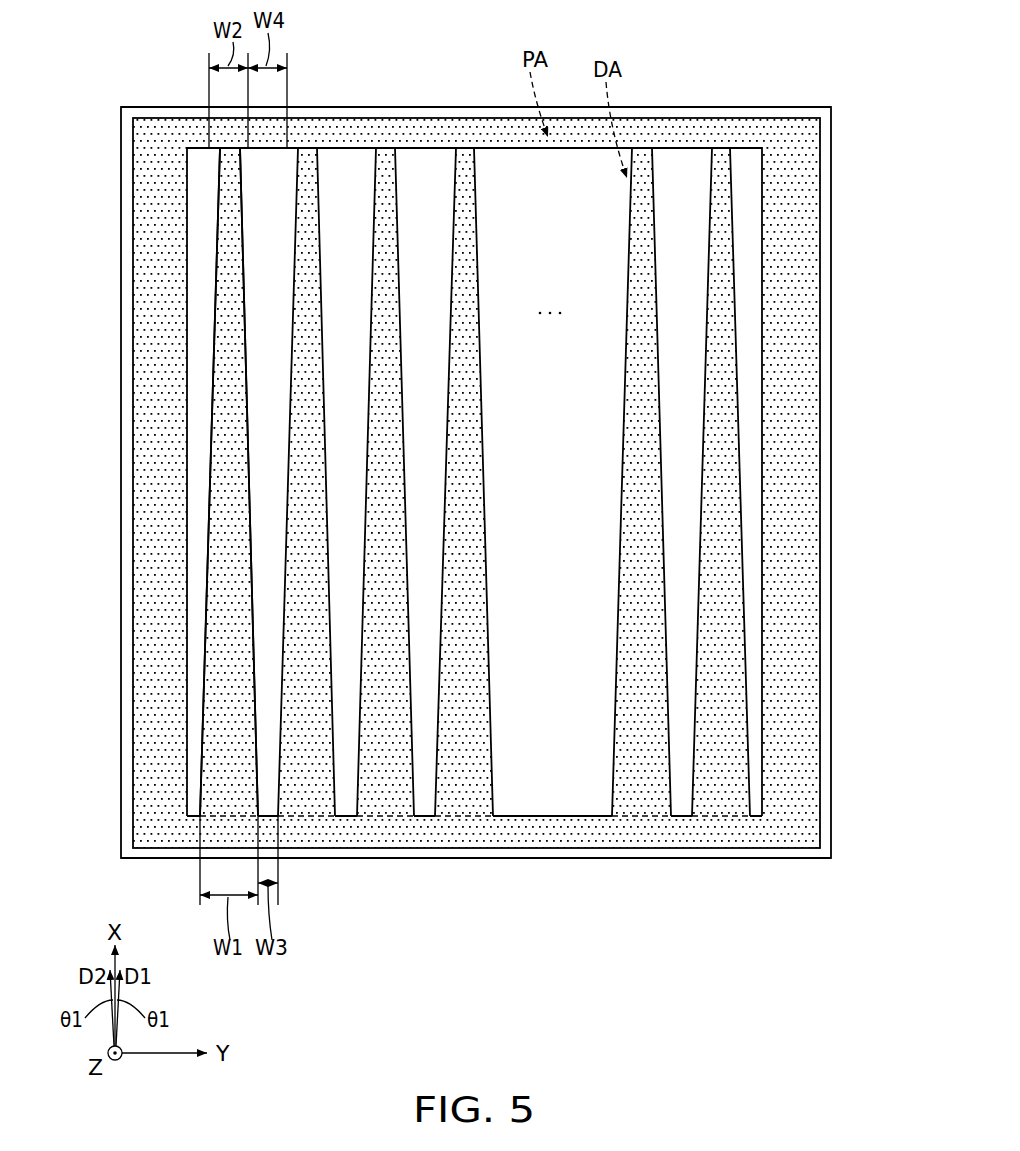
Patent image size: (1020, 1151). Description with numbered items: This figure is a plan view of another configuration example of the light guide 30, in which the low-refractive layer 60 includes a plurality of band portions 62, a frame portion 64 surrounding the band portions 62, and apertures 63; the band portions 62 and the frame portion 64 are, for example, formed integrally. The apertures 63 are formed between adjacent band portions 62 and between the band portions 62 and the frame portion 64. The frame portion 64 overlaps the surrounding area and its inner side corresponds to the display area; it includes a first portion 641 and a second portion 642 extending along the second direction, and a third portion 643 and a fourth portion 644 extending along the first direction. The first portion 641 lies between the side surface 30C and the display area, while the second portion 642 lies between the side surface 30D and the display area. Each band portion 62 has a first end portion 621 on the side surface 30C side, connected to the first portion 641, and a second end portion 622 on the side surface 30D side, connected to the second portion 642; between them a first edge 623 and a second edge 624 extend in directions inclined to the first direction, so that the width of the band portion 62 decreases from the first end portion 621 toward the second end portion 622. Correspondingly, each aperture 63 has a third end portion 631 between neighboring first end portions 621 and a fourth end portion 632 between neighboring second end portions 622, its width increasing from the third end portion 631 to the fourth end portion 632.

The light guide 30 is at (835, 68).
The side surface 30C is at (678, 858).
The side surface 30D is at (686, 106).
The low-refractive layer 60 is at (767, 137).
The band portions 62 is at (467, 418).
The apertures 63 is at (267, 215).
The frame portion 64 is at (160, 135).
The first end portion 621 is at (222, 812).
The second end portion 622 is at (225, 162).
The first edge 623 is at (210, 473).
The second edge 624 is at (250, 492).
The third end portion 631 is at (275, 806).
The fourth end portion 632 is at (275, 148).
The first portion 641 is at (485, 830).
The second portion 642 is at (425, 137).
The third portion 643 is at (157, 425).
The fourth portion 644 is at (800, 455).